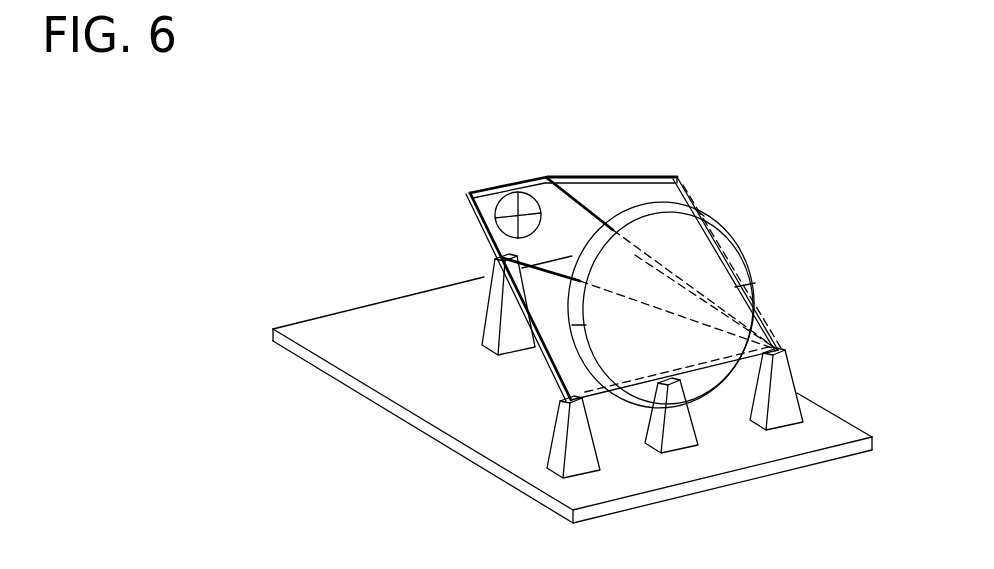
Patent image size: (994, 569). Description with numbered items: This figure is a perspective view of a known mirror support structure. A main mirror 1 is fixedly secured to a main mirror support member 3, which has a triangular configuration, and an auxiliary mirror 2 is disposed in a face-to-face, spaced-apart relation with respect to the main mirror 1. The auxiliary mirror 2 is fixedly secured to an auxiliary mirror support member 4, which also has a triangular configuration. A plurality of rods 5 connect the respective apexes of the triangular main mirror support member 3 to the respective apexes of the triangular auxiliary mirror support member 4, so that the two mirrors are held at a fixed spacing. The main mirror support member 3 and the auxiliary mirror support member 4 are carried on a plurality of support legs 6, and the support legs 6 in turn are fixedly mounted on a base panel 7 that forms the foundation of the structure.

The main mirror 1 is at (630, 210).
The auxiliary mirror 2 is at (527, 203).
The main mirror support member 3 is at (680, 230).
The auxiliary mirror support member 4 is at (490, 200).
The rods 5 is at (587, 203).
The support legs 6 is at (783, 380).
The base panel 7 is at (817, 428).